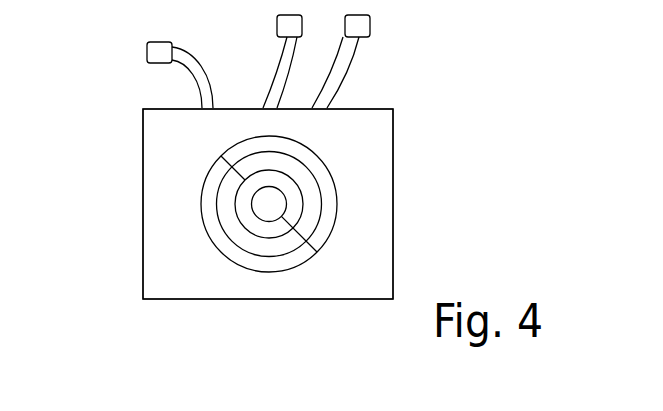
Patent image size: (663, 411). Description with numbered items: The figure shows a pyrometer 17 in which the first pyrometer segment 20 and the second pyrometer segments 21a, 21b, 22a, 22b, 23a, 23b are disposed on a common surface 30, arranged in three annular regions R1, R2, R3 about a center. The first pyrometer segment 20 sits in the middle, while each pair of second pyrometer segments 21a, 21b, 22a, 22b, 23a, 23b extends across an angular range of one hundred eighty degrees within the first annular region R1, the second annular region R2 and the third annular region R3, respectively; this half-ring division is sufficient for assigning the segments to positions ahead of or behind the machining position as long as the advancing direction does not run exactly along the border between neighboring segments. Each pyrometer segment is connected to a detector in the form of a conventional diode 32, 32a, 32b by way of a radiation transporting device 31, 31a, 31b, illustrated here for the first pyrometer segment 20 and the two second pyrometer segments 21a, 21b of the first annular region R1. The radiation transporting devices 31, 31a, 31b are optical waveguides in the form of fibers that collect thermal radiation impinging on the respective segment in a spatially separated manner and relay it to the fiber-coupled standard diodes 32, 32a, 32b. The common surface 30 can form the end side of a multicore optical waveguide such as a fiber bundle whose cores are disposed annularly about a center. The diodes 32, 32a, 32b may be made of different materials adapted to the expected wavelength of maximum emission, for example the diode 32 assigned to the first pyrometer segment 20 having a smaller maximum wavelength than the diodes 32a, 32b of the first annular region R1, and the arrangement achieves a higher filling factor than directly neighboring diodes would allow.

The pyrometer 17 is at (390, 98).
The first pyrometer segment 20 is at (287, 202).
The second pyrometer segment 21a is at (242, 197).
The second pyrometer segment 21b is at (283, 185).
The second pyrometer segment 22a is at (223, 212).
The second pyrometer segment 22b is at (282, 160).
The second pyrometer segment 23a is at (213, 178).
The second pyrometer segment 23b is at (333, 220).
The common surface 30 is at (357, 280).
The radiation transporting device 31 is at (275, 85).
The radiation transporting device 31a is at (193, 78).
The radiation transporting device 31b is at (343, 86).
The diode 32 is at (280, 24).
The diode 32a is at (150, 50).
The diode 32b is at (357, 23).
The first annular region R1 is at (242, 223).
The second annular region R2 is at (248, 243).
The third annular region R3 is at (258, 263).